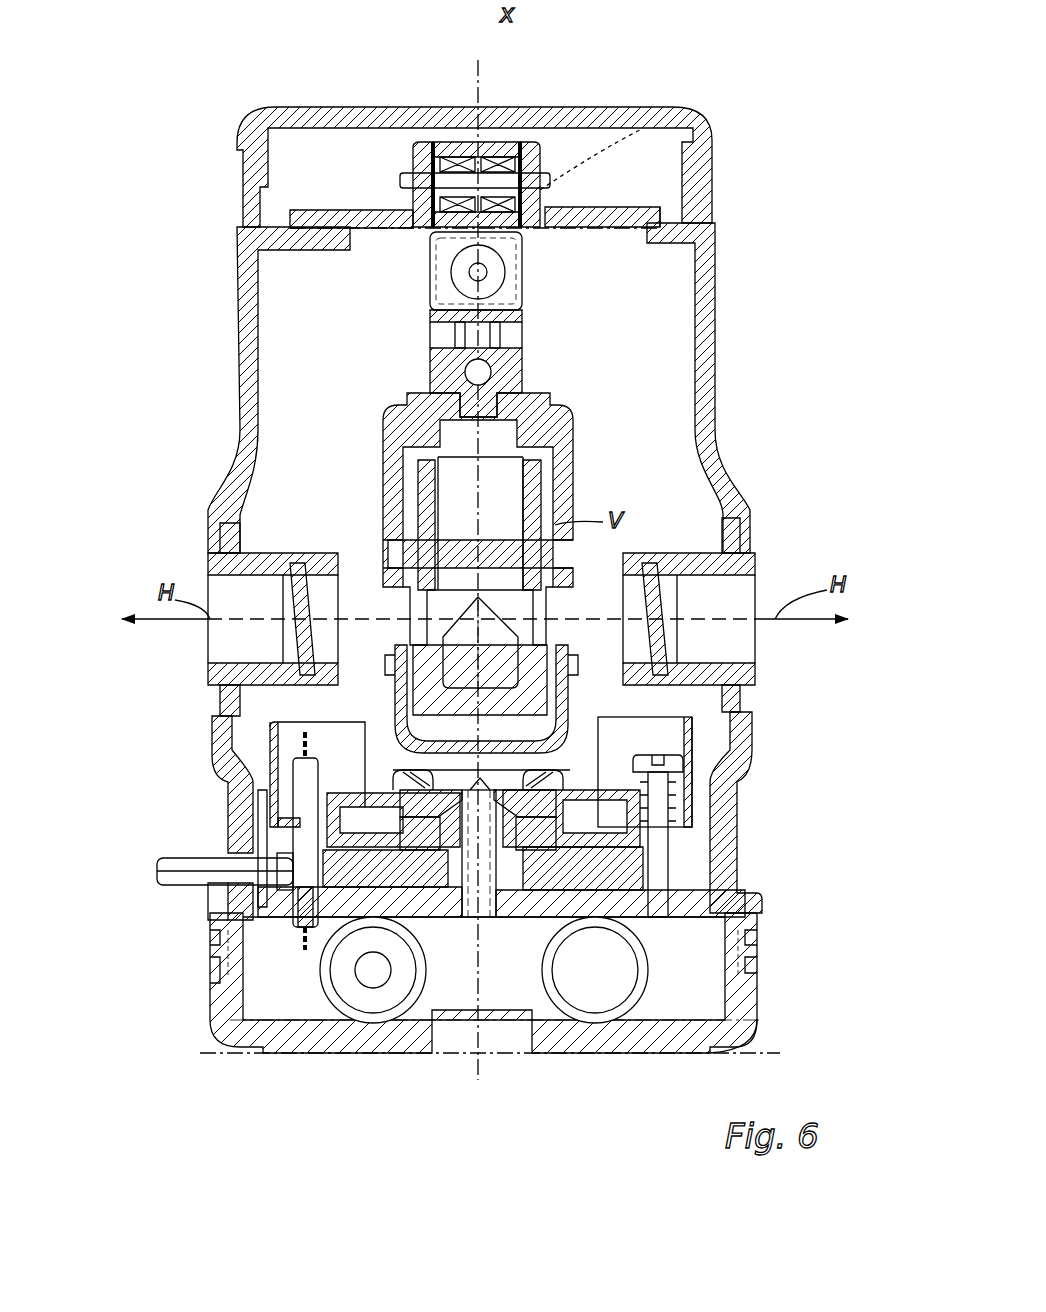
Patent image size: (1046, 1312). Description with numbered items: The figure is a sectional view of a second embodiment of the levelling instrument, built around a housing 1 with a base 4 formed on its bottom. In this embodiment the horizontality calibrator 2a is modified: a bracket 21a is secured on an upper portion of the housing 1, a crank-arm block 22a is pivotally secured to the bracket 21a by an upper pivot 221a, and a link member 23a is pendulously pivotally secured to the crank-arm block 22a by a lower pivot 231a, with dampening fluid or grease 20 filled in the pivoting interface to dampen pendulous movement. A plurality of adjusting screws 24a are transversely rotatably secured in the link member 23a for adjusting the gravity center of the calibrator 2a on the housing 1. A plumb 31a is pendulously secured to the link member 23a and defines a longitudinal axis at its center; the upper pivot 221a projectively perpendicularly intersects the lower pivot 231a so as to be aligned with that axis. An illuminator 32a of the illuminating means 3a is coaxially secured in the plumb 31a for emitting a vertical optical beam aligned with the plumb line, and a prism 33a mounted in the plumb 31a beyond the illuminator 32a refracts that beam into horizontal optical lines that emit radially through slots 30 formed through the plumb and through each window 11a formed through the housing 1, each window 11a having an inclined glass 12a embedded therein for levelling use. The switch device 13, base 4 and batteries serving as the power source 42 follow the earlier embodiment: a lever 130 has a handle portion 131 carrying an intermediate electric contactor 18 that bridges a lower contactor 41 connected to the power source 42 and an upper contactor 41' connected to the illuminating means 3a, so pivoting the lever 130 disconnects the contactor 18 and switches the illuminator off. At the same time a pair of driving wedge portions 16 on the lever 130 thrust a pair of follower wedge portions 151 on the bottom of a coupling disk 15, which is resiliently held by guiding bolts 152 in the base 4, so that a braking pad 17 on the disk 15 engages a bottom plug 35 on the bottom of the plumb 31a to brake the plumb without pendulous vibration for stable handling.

The housing 1 is at (718, 212).
The horizontality calibrator 2a is at (578, 165).
The upper pivot 221a is at (640, 130).
The dampening fluid or grease 20 is at (442, 150).
The bracket 21a is at (418, 150).
The crank-arm block 22a is at (505, 150).
The link member 23a is at (430, 302).
The lower pivot 231a is at (490, 268).
The adjusting screws 24a is at (440, 372).
The illuminating means 3a is at (592, 425).
The plumb 31a is at (390, 455).
The illuminator 32a is at (545, 525).
The prism 33a is at (465, 625).
The slots 30 is at (553, 592).
The window 11a is at (238, 588).
The inclined glass 12a is at (300, 640).
The bottom plug 35 is at (572, 735).
The upper contactor 41' is at (232, 814).
The lower contactor 41 is at (229, 877).
The handle portion 131 is at (160, 870).
The lever 130 is at (162, 884).
The intermediate electric contactor 18 is at (340, 858).
The coupling disk 15 is at (642, 812).
The switch device 13 is at (310, 878).
The driving wedge portions 16 is at (455, 1010).
The guiding bolts 152 is at (655, 778).
The braking pad 17 is at (670, 800).
The base 4 is at (768, 1010).
The power source 42 is at (373, 1000).
The follower wedge portions 151 is at (560, 920).